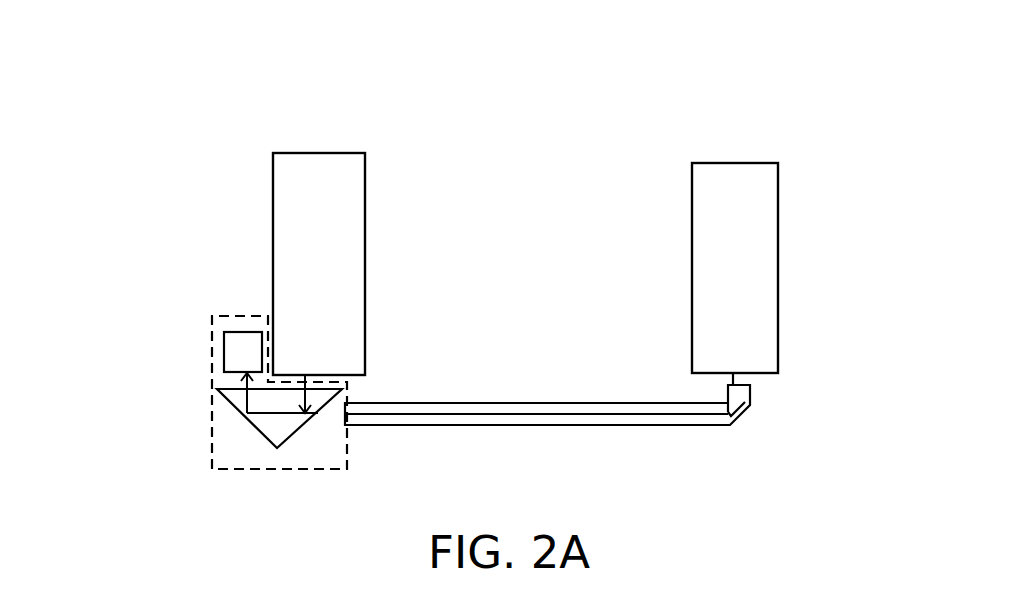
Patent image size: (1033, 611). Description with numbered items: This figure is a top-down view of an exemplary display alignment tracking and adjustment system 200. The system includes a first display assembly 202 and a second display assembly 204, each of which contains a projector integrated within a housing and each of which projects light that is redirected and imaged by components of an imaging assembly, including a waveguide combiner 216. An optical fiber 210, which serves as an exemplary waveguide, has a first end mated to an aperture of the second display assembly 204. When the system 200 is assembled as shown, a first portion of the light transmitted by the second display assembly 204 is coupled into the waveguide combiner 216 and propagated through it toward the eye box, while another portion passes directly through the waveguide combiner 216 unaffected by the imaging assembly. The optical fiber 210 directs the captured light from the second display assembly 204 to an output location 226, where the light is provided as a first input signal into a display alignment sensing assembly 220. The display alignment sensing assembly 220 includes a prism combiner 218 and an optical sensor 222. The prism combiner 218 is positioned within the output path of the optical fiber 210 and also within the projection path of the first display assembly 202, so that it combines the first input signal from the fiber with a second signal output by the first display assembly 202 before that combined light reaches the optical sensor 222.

The display alignment tracking and adjustment system 200 is at (163, 92).
The first display assembly 202 is at (339, 274).
The second display assembly 204 is at (758, 276).
The optical fiber 210 is at (477, 405).
The waveguide combiner 216 is at (307, 380).
The prism combiner 218 is at (275, 425).
The display alignment sensing assembly 220 is at (215, 430).
The optical sensor 222 is at (228, 349).
The output location 226 is at (330, 428).